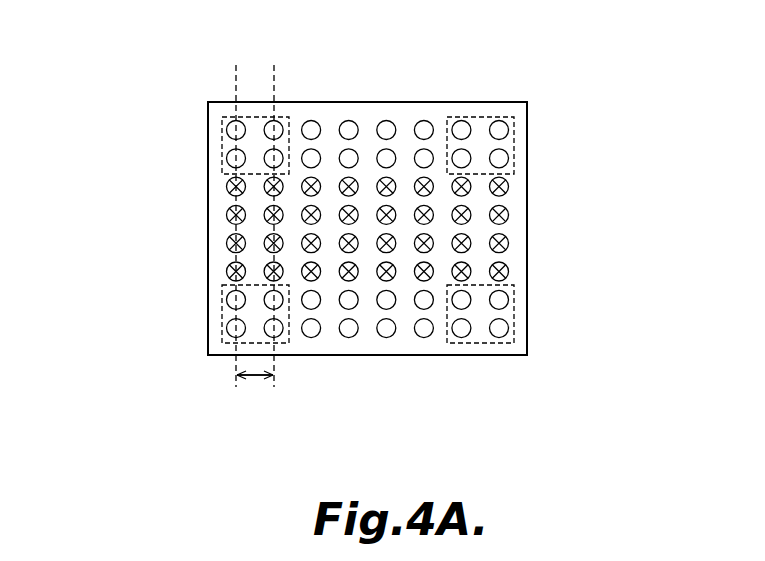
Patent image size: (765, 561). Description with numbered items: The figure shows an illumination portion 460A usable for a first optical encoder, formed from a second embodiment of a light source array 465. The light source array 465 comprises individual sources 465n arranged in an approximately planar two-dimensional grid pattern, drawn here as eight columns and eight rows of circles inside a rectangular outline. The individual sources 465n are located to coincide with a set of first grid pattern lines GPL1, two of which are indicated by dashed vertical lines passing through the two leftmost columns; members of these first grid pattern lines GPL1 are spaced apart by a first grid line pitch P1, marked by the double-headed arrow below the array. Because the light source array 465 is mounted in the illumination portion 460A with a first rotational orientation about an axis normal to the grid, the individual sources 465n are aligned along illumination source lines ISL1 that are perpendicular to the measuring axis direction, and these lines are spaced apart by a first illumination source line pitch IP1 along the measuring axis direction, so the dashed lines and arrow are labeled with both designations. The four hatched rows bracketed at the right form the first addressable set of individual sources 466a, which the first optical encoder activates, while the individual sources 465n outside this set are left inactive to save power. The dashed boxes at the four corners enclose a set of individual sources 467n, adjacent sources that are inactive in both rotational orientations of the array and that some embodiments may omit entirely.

The illumination portion 460A is at (478, 101).
The light source array 465 is at (413, 184).
The individual sources 465n is at (341, 92).
The first addressable set of individual sources 466a is at (536, 177).
The set of individual sources 467n is at (222, 132).
The illumination source lines ISL1 is at (235, 85).
The first grid pattern lines GPL1 is at (273, 85).
The first grid line pitch P1 is at (253, 377).
The first illumination source line pitch IP1 is at (258, 412).